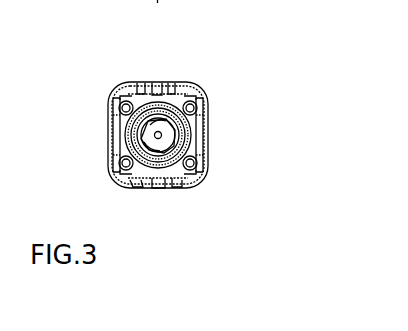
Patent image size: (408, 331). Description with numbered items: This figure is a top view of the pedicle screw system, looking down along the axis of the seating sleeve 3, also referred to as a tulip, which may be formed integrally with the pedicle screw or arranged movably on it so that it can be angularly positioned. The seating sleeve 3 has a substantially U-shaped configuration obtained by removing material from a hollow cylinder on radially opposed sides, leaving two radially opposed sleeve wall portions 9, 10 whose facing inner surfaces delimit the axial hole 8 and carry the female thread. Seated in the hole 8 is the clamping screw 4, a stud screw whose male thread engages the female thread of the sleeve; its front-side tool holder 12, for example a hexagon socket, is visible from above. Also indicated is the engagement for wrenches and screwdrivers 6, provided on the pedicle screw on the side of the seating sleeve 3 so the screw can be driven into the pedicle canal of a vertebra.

The seating sleeve 3 is at (199, 81).
The clamping screw 4 is at (168, 133).
The engagement for wrenches and screwdrivers 6 is at (159, 83).
The hole 8 is at (108, 141).
The sleeve wall portion 9 is at (133, 93).
The sleeve wall portion 10 is at (132, 180).
The tool holder 12 is at (162, 123).